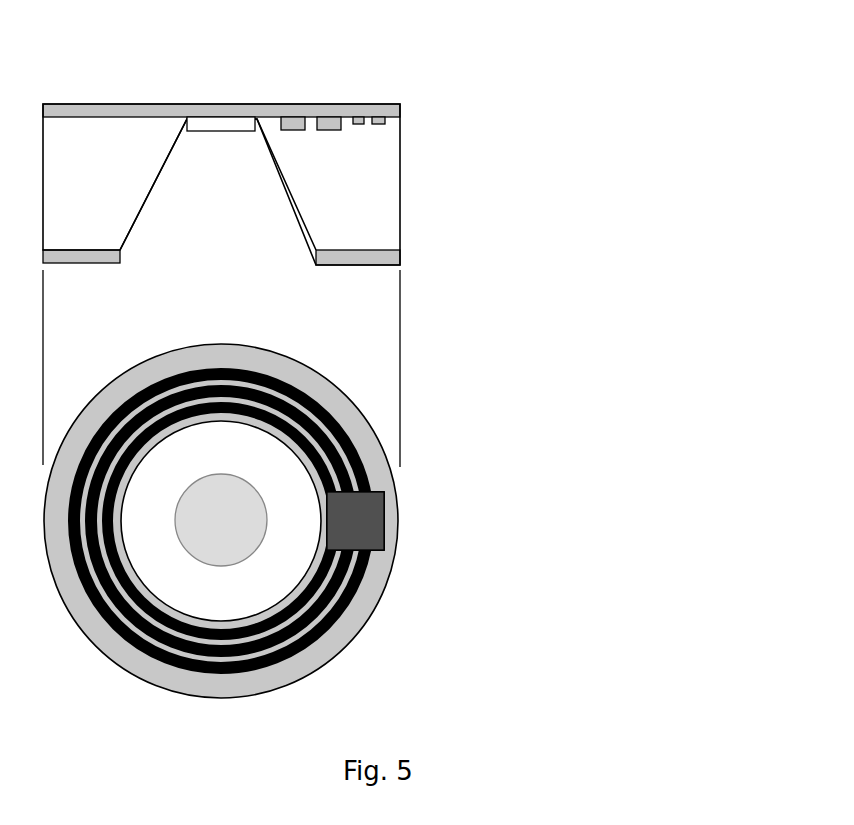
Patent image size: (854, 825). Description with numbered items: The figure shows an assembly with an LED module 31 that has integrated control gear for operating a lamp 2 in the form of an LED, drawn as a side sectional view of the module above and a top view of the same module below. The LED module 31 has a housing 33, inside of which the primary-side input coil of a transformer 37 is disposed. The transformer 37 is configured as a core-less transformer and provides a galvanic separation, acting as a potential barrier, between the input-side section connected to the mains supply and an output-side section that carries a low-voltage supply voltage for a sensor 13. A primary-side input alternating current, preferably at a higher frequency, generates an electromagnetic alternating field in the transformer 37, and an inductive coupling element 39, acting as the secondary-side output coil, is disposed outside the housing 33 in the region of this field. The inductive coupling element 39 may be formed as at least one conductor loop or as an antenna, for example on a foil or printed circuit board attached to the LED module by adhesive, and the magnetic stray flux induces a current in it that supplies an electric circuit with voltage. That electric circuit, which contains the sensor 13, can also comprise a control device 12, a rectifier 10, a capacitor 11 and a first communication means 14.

The lamp 2 is at (211, 468).
The rectifier 10 is at (355, 521).
The capacitor 11 is at (355, 521).
The control device 12 is at (355, 521).
The sensor 13 is at (385, 520).
The first communication means 14 is at (355, 521).
The LED module 31 is at (102, 184).
The housing 33 is at (400, 199).
The transformer 37 is at (330, 118).
The inductive coupling element 39 is at (355, 617).